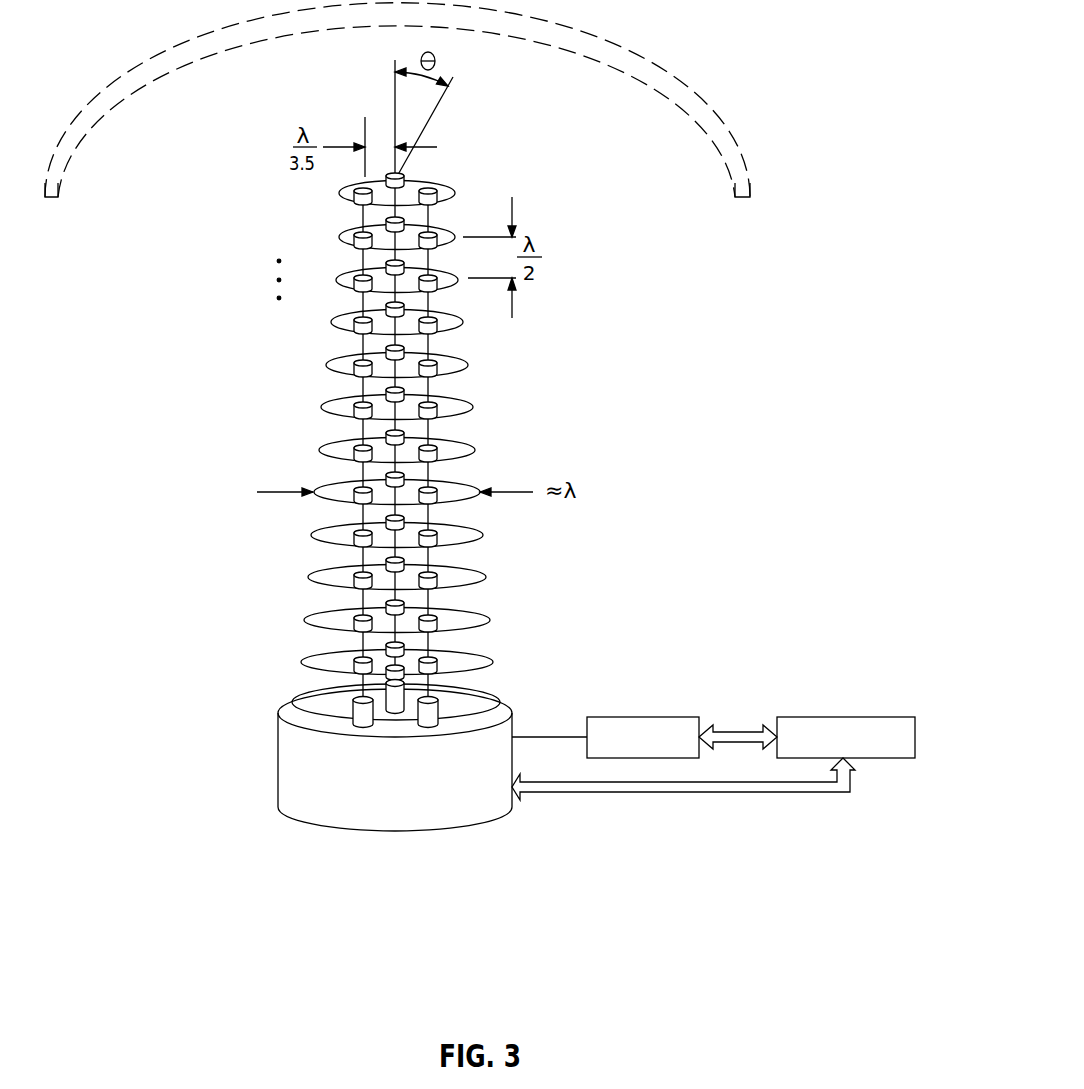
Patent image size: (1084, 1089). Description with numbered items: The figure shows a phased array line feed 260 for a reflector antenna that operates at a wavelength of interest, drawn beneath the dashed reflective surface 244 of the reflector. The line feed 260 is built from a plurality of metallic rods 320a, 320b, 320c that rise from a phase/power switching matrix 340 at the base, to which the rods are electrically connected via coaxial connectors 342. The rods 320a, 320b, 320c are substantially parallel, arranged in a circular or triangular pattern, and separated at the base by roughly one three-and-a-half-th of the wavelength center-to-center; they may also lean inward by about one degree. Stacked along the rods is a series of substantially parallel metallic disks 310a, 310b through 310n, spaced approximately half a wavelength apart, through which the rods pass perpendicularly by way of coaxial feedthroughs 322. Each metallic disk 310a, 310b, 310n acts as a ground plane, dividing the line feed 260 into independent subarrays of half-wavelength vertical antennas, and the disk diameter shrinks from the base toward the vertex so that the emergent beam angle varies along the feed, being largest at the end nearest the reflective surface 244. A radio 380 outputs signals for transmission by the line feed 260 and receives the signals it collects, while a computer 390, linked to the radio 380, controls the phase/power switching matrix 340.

The reflective surface 244 is at (692, 80).
The phased array line feed 260 is at (588, 207).
The metallic disk 310a is at (340, 191).
The metallic disk 310b is at (338, 235).
The metallic disk 310n is at (307, 713).
The metallic rod 320a is at (337, 689).
The metallic rod 320b is at (404, 682).
The metallic rod 320c is at (437, 710).
The coaxial feedthrough 322 is at (436, 578).
The phase/power switching matrix 340 is at (460, 803).
The coaxial connector 342 is at (357, 722).
The radio 380 is at (678, 717).
The computer 390 is at (871, 737).